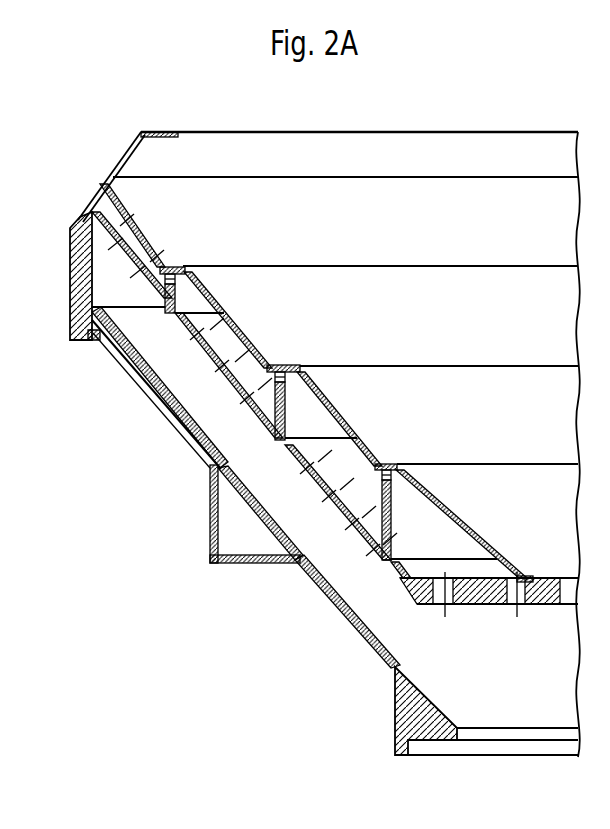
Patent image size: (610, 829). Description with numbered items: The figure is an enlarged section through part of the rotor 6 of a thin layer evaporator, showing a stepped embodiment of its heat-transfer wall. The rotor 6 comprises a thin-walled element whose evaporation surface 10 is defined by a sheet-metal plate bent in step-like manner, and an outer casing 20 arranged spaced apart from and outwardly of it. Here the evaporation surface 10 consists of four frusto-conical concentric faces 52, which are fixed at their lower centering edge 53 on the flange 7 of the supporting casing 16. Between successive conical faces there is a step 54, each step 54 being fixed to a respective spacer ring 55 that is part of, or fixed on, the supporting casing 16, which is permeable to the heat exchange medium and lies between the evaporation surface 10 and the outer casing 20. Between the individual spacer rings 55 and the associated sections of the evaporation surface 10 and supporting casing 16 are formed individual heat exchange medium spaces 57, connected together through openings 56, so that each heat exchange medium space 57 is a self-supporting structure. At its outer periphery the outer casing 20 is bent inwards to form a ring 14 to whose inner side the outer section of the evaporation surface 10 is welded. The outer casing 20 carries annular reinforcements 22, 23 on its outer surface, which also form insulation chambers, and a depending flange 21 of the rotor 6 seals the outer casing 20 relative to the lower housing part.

The rotor 6 is at (284, 132).
The ring 14 is at (77, 216).
The heat exchange medium space 57 is at (118, 223).
The step 54 is at (180, 268).
The opening 56 is at (179, 283).
The spacer ring 55 is at (166, 305).
The frusto-conical concentric face 52 is at (148, 233).
The annular reinforcement 22 is at (143, 400).
The supporting casing 16 is at (208, 363).
The lower reinforcement 23 is at (258, 564).
The outer casing 20 is at (347, 618).
The depending flange 21 is at (395, 720).
The lower centering edge 53 is at (531, 576).
The flange 7 is at (548, 606).
The evaporation surface 10 is at (486, 525).